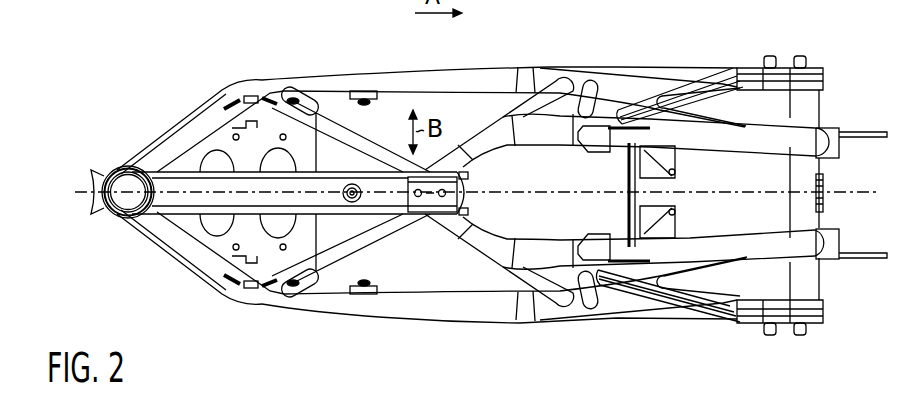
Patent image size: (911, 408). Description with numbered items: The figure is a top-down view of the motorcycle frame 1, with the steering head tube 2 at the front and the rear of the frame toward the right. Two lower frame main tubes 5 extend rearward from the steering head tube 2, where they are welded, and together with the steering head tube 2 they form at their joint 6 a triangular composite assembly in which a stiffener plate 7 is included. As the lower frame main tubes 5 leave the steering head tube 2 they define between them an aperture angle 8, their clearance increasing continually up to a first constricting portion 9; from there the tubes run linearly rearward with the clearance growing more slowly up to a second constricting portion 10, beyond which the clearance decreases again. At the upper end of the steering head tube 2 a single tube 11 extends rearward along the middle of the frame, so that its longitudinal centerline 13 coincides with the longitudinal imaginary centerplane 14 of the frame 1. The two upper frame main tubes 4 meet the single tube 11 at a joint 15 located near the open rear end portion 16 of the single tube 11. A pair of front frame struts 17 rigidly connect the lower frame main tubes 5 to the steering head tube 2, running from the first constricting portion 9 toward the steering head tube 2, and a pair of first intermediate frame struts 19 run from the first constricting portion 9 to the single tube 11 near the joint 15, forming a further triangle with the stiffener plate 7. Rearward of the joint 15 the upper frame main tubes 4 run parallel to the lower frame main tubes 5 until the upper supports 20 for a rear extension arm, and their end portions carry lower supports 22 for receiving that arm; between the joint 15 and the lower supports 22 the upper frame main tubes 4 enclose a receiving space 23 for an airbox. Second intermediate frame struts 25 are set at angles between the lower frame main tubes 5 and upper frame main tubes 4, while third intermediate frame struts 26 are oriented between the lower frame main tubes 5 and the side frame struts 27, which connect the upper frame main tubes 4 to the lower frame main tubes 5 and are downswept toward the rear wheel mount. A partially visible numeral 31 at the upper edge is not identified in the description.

The motorcycle frame 1 is at (82, 113).
The steering head tube 2 is at (115, 218).
The upper frame main tubes 4 is at (563, 123).
The lower frame main tubes 5 is at (410, 76).
The joint 6 is at (124, 229).
The stiffener plate 7 is at (190, 163).
The aperture angle 8 is at (180, 162).
The first constricting portion 9 is at (260, 79).
The second constricting portion 10 is at (520, 67).
The single tube 11 is at (305, 183).
The longitudinal centerline of the single tube 13 is at (90, 188).
The longitudinal imaginary centerplane 14 is at (842, 193).
The joint 15 is at (421, 214).
The open rear end portion 16 is at (469, 183).
The front frame struts 17 is at (210, 113).
The first intermediate frame struts 19 is at (347, 136).
The upper supports 20 is at (606, 136).
The lower supports 22 is at (832, 128).
The receiving space 23 is at (587, 190).
The second intermediate frame struts 25 is at (553, 90).
The third intermediate frame struts 26 is at (595, 103).
The side frame struts 27 is at (686, 84).
The component (cropped) 31 is at (813, 5).